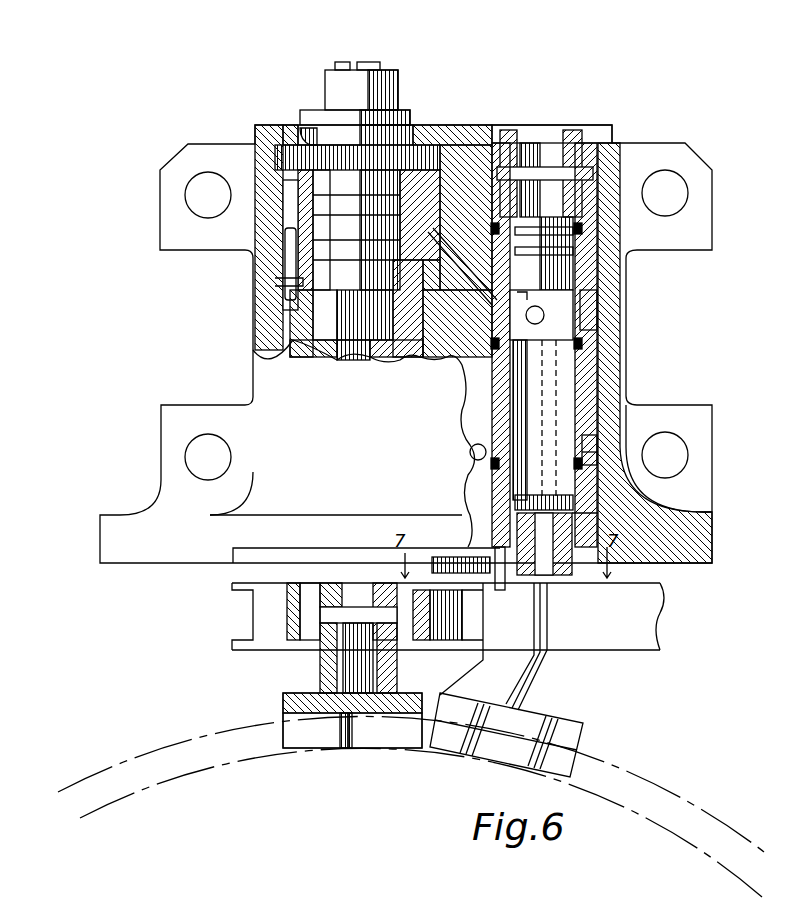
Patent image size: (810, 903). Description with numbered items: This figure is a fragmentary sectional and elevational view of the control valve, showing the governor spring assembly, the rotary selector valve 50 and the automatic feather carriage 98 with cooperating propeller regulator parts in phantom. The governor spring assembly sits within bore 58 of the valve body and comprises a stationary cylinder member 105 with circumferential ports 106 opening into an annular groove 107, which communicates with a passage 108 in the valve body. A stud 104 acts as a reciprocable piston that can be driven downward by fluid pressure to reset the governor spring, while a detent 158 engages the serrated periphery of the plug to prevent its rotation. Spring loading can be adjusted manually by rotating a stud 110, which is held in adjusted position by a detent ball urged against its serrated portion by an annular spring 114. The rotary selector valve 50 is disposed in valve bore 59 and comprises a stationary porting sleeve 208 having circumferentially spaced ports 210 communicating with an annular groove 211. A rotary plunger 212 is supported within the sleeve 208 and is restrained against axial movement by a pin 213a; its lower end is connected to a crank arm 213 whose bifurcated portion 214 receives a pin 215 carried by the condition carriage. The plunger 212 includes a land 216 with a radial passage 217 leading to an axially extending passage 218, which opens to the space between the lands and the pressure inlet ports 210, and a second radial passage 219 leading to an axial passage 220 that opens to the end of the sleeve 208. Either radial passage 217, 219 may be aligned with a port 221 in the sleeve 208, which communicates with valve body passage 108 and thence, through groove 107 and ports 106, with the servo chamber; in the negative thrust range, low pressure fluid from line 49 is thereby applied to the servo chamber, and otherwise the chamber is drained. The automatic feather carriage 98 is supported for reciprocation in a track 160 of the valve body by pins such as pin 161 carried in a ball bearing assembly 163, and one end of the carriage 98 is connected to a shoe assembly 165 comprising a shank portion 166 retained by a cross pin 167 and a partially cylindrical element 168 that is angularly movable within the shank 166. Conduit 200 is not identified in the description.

The low pressure line 49 is at (470, 456).
The rotary selector valve 50 is at (593, 345).
The bore 58 is at (400, 132).
The valve bore 59 is at (593, 140).
The automatic feather carriage 98 is at (388, 678).
The stud 104 is at (357, 357).
The stationary cylinder member 105 is at (275, 172).
The circumferential ports 106 is at (303, 280).
The annular groove 107 is at (287, 253).
The passage 108 is at (433, 357).
The stud 110 is at (373, 63).
The annular spring 114 is at (326, 72).
The detent 158 is at (453, 147).
The track 160 is at (400, 637).
The pin 161 is at (340, 617).
The ball bearing assembly 163 is at (313, 595).
The shoe assembly 165 is at (352, 722).
The shank portion 166 is at (367, 673).
The cross pin 167 is at (340, 670).
The partially cylindrical element 168 is at (410, 742).
The conduit 200 is at (537, 683).
The stationary porting sleeve 208 is at (587, 337).
The ports 210 is at (598, 442).
The annular groove 211 is at (597, 457).
The rotary plunger 212 is at (573, 310).
The crank arm 213 is at (525, 357).
The pin 213a is at (515, 247).
The bifurcated portion 214 is at (457, 562).
The pin 215 is at (498, 580).
The land 216 is at (593, 323).
The radial passage 217 is at (543, 308).
The axially extending passage 218 is at (573, 387).
The second radial passage 219 is at (432, 357).
The axial passage 220 is at (517, 290).
The port 221 is at (488, 290).